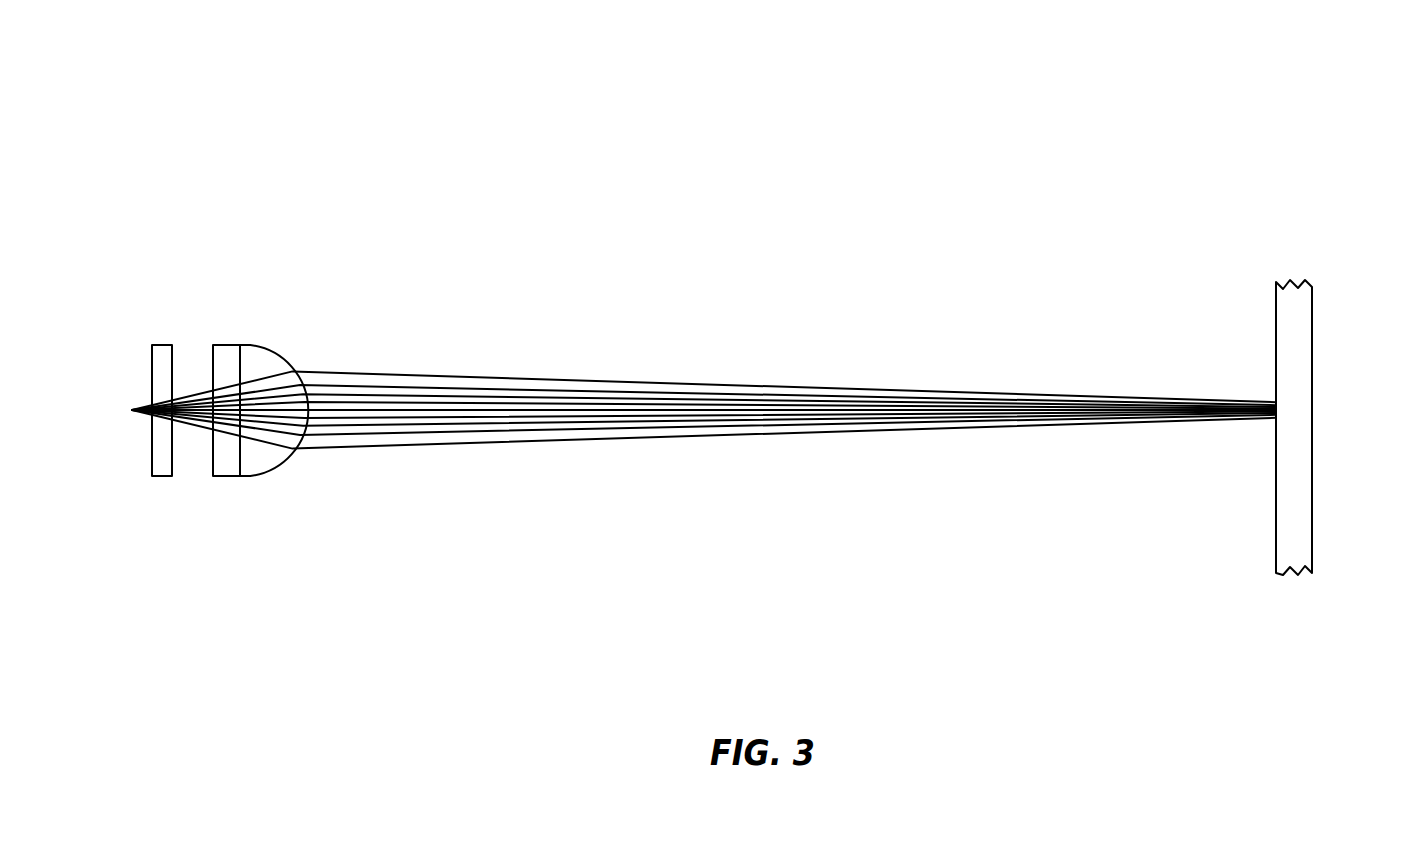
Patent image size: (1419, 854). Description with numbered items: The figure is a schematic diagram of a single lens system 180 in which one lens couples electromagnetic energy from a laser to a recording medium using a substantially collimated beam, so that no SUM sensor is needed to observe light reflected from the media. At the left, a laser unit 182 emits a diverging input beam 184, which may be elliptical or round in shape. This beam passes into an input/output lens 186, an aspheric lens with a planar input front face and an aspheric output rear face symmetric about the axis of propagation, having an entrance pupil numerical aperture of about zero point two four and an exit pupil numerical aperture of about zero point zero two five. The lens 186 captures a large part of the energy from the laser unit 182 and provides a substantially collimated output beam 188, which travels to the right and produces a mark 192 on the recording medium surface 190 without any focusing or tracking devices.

The single lens system 180 is at (413, 166).
The laser unit 182 is at (164, 481).
The diverging input beam 184 is at (190, 393).
The input/output lens 186 is at (277, 479).
The substantially collimated output beam 188 is at (573, 383).
The recording medium surface 190 is at (1312, 379).
The mark 192 is at (1266, 397).